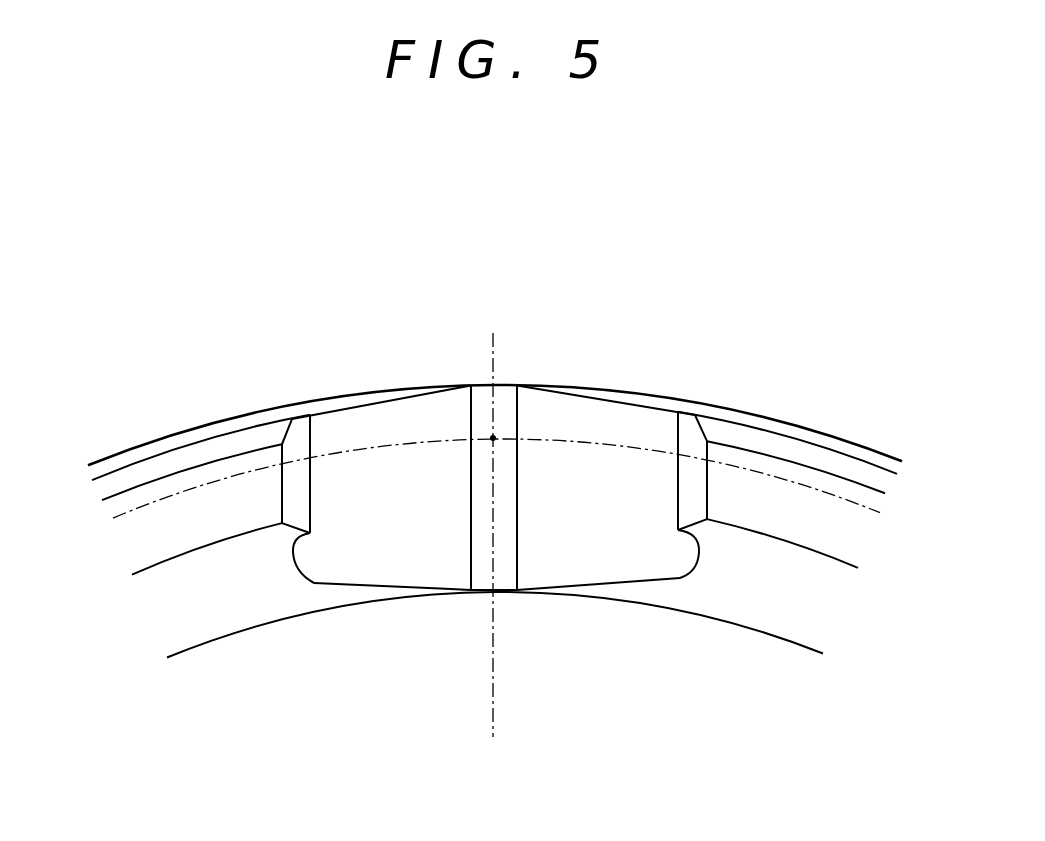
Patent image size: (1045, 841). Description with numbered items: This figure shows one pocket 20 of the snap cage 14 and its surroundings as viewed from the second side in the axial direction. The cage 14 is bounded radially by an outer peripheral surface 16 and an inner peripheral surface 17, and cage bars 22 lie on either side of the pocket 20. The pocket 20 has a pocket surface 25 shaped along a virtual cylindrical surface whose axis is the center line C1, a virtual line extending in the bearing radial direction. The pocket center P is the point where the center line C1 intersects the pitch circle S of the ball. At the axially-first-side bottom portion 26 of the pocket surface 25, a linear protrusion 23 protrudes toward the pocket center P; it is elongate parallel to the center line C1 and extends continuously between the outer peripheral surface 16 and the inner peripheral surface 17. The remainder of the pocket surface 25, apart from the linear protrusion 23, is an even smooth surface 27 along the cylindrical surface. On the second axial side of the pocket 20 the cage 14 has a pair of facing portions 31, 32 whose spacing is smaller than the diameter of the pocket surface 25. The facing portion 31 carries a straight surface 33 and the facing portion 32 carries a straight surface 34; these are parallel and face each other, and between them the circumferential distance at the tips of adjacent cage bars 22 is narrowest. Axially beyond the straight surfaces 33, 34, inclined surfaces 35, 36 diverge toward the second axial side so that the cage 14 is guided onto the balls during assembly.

The cage 14 is at (124, 444).
The outer peripheral surface 16 is at (760, 410).
The inner peripheral surface 17 is at (707, 590).
The pocket 20 is at (496, 496).
The cage bar 22 is at (188, 512).
The linear protrusion 23 is at (510, 547).
The pocket surface 25 is at (407, 570).
The axially-first-side bottom portion 26 is at (477, 562).
The smooth surface 27 is at (583, 557).
The facing portion 31 is at (270, 490).
The facing portion 32 is at (720, 483).
The straight surface 33 is at (312, 482).
The straight surface 34 is at (678, 480).
The inclined surface 35 is at (298, 503).
The inclined surface 36 is at (690, 500).
The pocket center P is at (493, 438).
The pitch circle S is at (855, 448).
The center line C1 is at (493, 695).